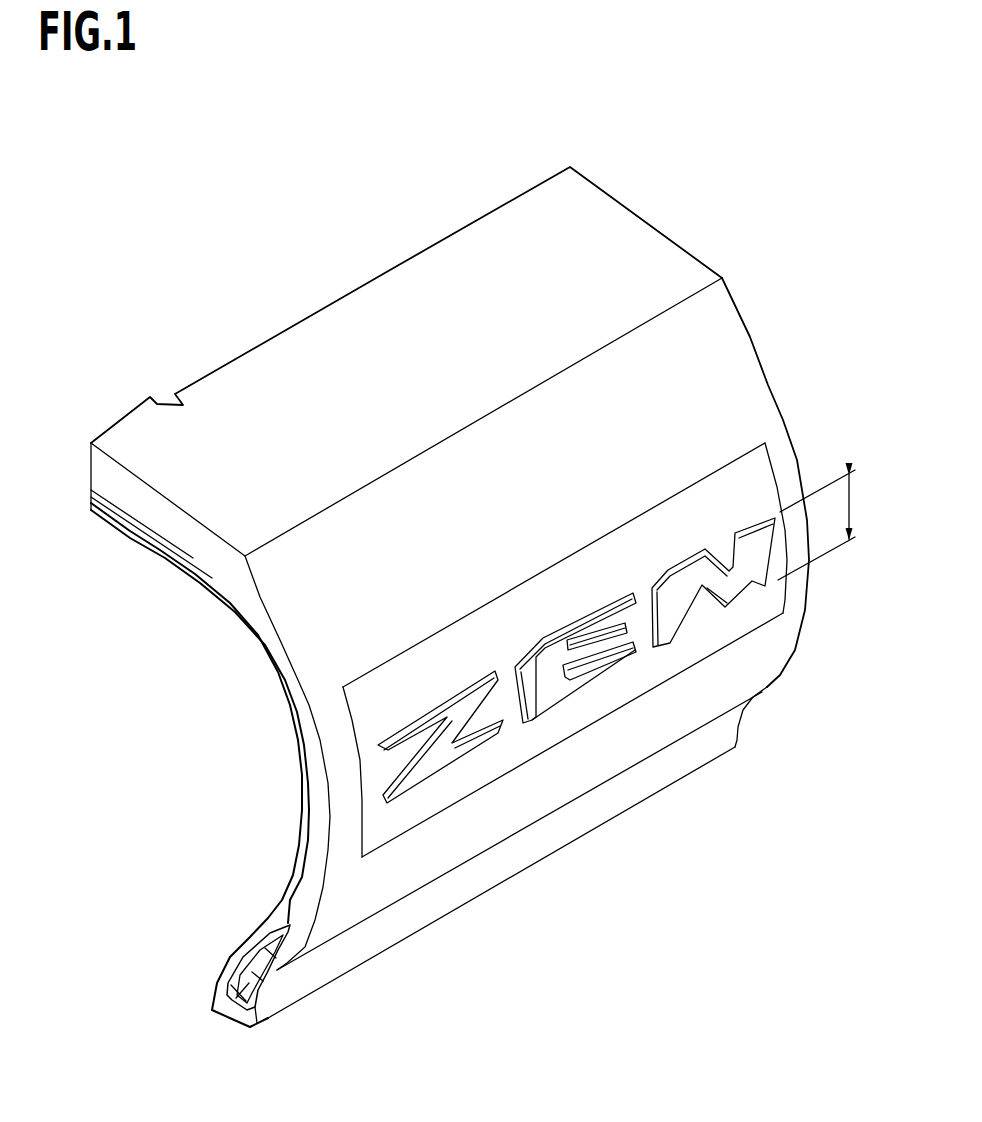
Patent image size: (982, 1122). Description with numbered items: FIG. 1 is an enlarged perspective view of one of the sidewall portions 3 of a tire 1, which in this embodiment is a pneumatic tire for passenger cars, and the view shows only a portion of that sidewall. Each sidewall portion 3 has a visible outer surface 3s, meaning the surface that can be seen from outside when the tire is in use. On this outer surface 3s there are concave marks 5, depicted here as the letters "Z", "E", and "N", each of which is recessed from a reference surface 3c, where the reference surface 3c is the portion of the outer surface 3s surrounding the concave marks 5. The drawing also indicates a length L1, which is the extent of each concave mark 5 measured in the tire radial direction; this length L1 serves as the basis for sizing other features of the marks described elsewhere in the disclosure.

The tire 1 is at (190, 283).
The sidewall portion 3 is at (594, 570).
The outer surface 3s is at (572, 780).
The reference surface 3c is at (519, 876).
The concave mark 5 is at (580, 774).
The length L1 is at (833, 525).